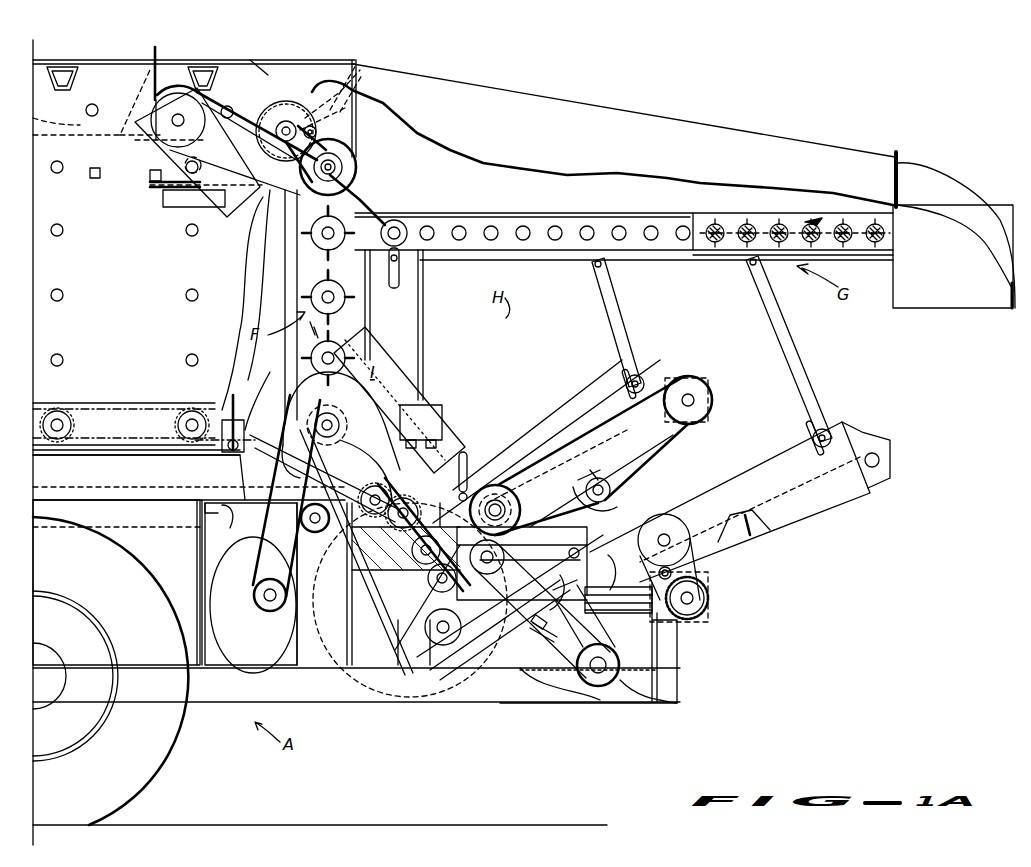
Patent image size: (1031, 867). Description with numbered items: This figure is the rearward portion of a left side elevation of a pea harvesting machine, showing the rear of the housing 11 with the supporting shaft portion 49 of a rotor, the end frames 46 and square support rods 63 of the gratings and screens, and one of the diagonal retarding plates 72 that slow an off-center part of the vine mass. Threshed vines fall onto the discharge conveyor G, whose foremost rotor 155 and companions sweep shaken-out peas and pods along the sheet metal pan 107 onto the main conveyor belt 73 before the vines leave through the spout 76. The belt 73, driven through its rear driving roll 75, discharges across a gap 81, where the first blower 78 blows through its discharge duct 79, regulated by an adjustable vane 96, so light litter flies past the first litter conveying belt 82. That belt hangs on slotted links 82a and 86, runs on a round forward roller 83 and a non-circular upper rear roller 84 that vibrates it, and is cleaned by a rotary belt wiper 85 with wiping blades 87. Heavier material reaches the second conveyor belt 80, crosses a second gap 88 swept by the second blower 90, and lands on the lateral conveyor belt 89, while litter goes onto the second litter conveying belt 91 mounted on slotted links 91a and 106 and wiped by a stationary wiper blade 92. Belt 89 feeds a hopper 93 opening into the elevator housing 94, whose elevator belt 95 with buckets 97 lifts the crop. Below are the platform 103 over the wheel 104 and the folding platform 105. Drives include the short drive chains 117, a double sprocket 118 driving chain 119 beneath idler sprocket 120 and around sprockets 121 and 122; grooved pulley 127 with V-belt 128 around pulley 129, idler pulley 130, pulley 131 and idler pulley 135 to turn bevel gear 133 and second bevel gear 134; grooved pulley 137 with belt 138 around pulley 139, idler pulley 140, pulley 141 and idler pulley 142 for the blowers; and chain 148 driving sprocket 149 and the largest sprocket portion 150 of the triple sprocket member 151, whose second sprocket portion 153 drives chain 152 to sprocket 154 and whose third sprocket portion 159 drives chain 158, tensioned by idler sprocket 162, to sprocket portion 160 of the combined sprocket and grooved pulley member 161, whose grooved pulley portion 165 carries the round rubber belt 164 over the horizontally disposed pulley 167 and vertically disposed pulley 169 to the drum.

The housing 11 is at (125, 75).
The end frames 46 is at (215, 460).
The supporting shaft portion 49 is at (65, 355).
The square support rods 63 is at (232, 455).
The retarding plates 72 is at (110, 136).
The main conveyor belt 73 is at (238, 497).
The rear driving roll 75 is at (362, 563).
The spout 76 is at (954, 235).
The first blower 78 is at (251, 588).
The discharge duct 79 is at (406, 584).
The second conveyor belt 80 is at (538, 576).
The gap 81 is at (432, 470).
The first litter conveying belt 82 is at (600, 425).
The slotted links 82a is at (462, 452).
The forward roller 83 is at (486, 500).
The upper rear roller 84 is at (712, 384).
The rotary belt wiper 85 is at (550, 458).
The slotted links 86 is at (618, 300).
The wiping blades 87 is at (620, 488).
The second gap 88 is at (613, 563).
The lateral conveyor belt 89 is at (660, 640).
The second blower 90 is at (522, 588).
The second litter conveying belt 91 is at (893, 480).
The slotted links 91a is at (690, 568).
The stationary wiper blade 92 is at (768, 525).
The hopper 93 is at (620, 680).
The elevator housing 94 is at (198, 152).
The elevator belt 95 is at (500, 670).
The adjustable vane 96 is at (402, 600).
The buckets 97 is at (565, 680).
The platform 103 is at (130, 490).
The wheel 104 is at (117, 662).
The folding platform 105 is at (356, 685).
The slotted links 106 is at (788, 322).
The sheet metal pan 107 is at (420, 260).
The short drive chains 117 is at (60, 405).
The double sprocket 118 is at (278, 385).
The chain 119 is at (315, 482).
The idler sprocket 120 is at (340, 425).
The sprocket 121 is at (322, 528).
The sprocket 122 is at (437, 540).
The grooved pulley 127 is at (432, 585).
The V-belt 128 is at (457, 621).
The pulley 129 is at (498, 498).
The idler pulley 130 is at (520, 535).
The pulley 131 is at (665, 520).
The bevel gear 133 is at (708, 602).
The second bevel gear 134 is at (705, 620).
The idler pulley 135 is at (582, 585).
The grooved pulley 137 is at (341, 436).
The belt 138 is at (258, 578).
The pulley 139 is at (259, 593).
The idler pulley 140 is at (342, 434).
The pulley 141 is at (412, 655).
The idler pulley 142 is at (405, 606).
The chain 148 is at (255, 83).
The sprocket 149 is at (160, 150).
The largest sprocket portion 150 is at (292, 100).
The triple sprocket member 151 is at (271, 68).
The chain 152 is at (300, 152).
The second sprocket portion 153 is at (318, 150).
The sprocket 154 is at (405, 218).
The foremost rotor 155 is at (398, 262).
The chain 158 is at (340, 150).
The third sprocket portion 159 is at (305, 172).
The sprocket portion 160 is at (356, 158).
The combined sprocket and grooved pulley member 161 is at (364, 171).
The idler sprocket 162 is at (292, 168).
The round rubber belt 164 is at (160, 190).
The grooved pulley portion 165 is at (340, 172).
The horizontally disposed pulley 167 is at (168, 206).
The vertically disposed pulley 169 is at (152, 180).